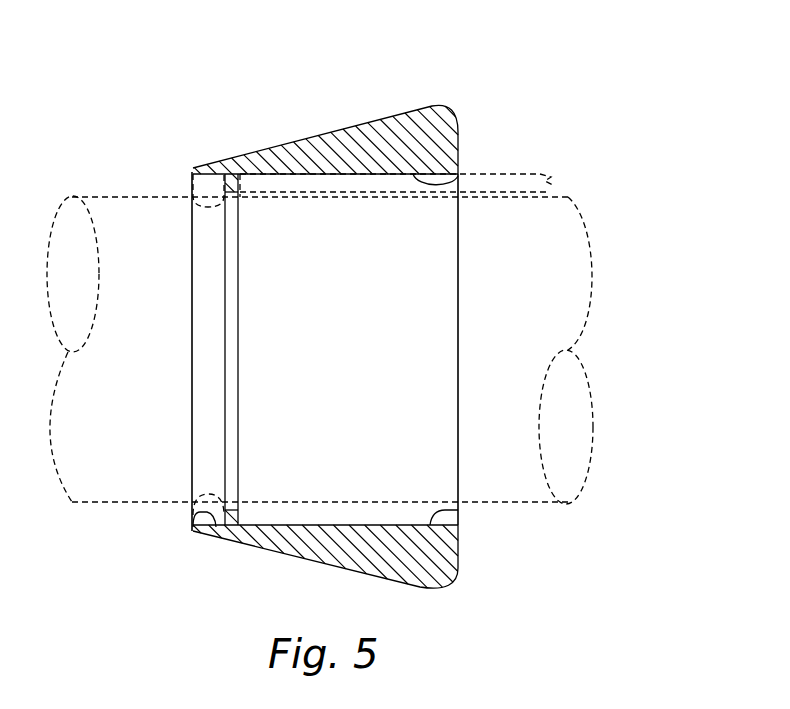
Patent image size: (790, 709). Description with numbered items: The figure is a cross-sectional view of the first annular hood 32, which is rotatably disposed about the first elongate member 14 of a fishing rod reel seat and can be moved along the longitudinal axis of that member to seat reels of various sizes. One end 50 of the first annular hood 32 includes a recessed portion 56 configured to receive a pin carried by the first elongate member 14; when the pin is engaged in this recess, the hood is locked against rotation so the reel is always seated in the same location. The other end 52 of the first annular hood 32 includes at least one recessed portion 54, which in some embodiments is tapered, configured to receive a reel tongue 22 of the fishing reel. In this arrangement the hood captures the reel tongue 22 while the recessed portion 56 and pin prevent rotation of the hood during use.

The first elongate member 14 is at (113, 190).
The reel tongue 22 is at (541, 174).
The first annular hood 32 is at (550, 106).
The one end of the first annular hood 50 is at (321, 317).
The another end of the first annular hood 52 is at (467, 118).
The recessed portion 54 is at (458, 174).
The recessed portion 56 is at (198, 512).